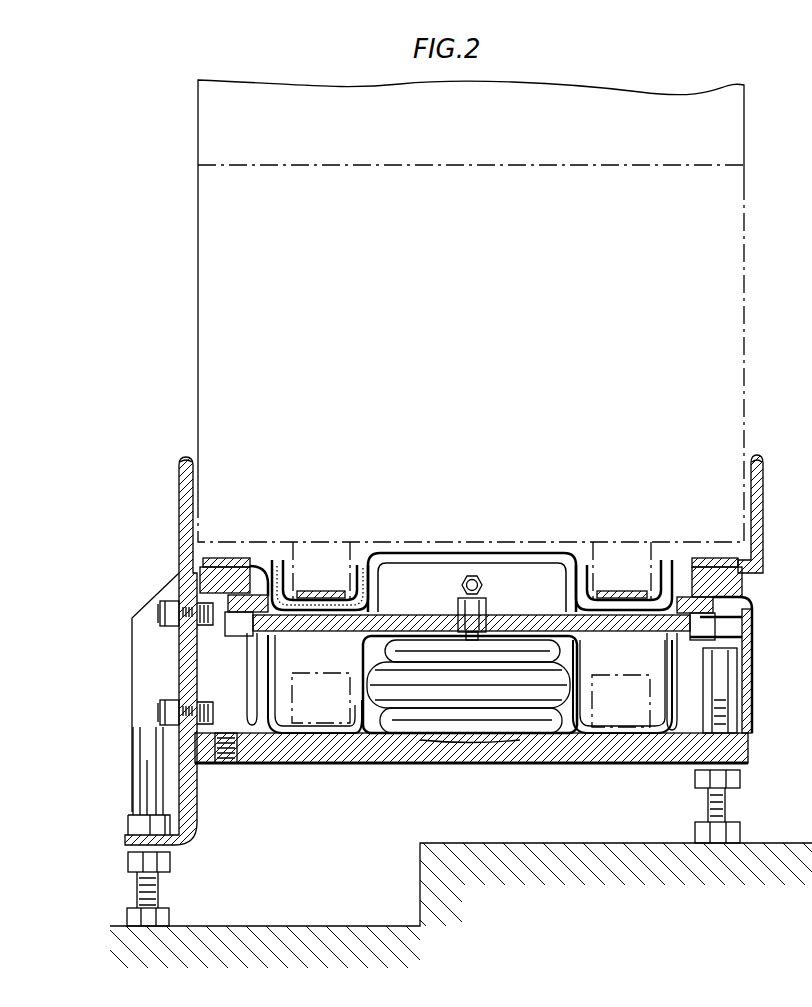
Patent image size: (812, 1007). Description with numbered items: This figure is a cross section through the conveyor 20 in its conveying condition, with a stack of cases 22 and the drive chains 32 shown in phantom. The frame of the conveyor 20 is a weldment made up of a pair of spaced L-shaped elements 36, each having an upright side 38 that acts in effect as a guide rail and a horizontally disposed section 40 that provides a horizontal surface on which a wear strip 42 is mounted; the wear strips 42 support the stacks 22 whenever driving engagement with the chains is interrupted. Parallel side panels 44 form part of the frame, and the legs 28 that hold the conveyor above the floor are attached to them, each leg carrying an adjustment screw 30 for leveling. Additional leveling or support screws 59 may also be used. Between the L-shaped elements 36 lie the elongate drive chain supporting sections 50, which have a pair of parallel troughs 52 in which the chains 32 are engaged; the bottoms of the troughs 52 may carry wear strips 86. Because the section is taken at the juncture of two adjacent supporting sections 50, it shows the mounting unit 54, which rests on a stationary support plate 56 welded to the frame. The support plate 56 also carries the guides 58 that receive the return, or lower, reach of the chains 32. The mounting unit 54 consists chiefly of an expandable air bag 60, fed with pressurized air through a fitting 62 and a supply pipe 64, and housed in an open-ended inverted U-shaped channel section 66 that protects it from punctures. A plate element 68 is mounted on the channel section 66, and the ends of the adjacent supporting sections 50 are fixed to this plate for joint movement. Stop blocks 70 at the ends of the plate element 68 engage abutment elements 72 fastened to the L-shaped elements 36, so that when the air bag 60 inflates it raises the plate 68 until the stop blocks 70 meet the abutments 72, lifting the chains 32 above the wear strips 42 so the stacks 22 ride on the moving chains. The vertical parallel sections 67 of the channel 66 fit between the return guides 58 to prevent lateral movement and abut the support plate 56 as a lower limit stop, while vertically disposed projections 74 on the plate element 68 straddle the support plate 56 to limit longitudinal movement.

The conveyor 20 is at (176, 548).
The stacks of cases 22 is at (698, 244).
The legs 28 is at (198, 815).
The adjustment screws 30 is at (160, 892).
The endless drive chains 32 is at (323, 575).
The L-shaped elements 36 is at (183, 453).
The side of L-shaped element 38 is at (180, 500).
The horizontally disposed sections 40 is at (742, 583).
The wear strips 42 is at (698, 557).
The side panels 44 is at (178, 665).
The drive chain supporting sections 50 is at (512, 553).
The troughs 52 is at (576, 604).
The mounting unit 54 is at (496, 740).
The stationary support plate 56 is at (568, 745).
The guides 58 is at (318, 740).
The leveling or support screws 59 is at (728, 802).
The expandable air bag 60 is at (432, 740).
The fitting 62 is at (486, 610).
The supply pipe 64 is at (472, 576).
The inverted U-shaped channel section 66 is at (487, 642).
The vertical parallel sections 67 is at (372, 675).
The plate element 68 is at (420, 620).
The stop blocks 70 is at (265, 582).
The abutment elements 72 is at (218, 560).
The vertically disposed projections 74 is at (258, 666).
The wear strips 86 is at (318, 600).